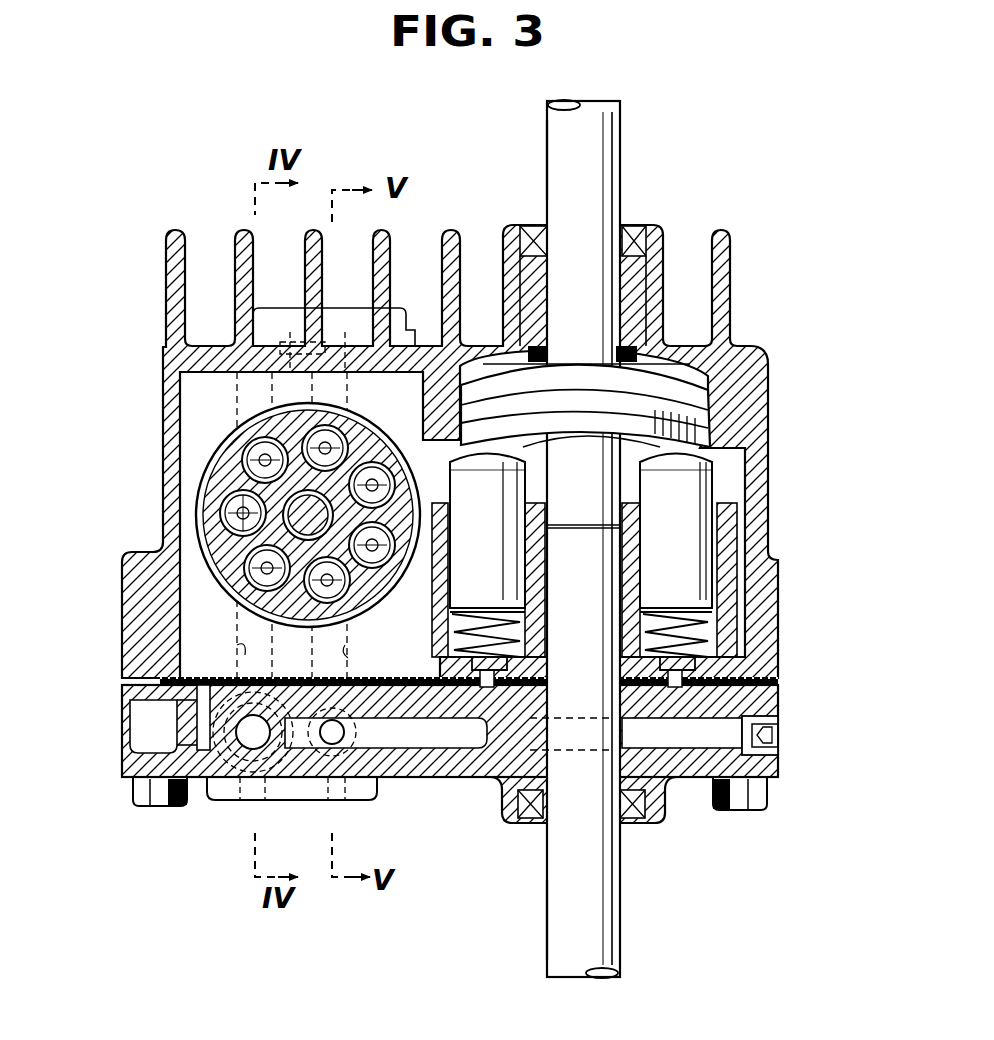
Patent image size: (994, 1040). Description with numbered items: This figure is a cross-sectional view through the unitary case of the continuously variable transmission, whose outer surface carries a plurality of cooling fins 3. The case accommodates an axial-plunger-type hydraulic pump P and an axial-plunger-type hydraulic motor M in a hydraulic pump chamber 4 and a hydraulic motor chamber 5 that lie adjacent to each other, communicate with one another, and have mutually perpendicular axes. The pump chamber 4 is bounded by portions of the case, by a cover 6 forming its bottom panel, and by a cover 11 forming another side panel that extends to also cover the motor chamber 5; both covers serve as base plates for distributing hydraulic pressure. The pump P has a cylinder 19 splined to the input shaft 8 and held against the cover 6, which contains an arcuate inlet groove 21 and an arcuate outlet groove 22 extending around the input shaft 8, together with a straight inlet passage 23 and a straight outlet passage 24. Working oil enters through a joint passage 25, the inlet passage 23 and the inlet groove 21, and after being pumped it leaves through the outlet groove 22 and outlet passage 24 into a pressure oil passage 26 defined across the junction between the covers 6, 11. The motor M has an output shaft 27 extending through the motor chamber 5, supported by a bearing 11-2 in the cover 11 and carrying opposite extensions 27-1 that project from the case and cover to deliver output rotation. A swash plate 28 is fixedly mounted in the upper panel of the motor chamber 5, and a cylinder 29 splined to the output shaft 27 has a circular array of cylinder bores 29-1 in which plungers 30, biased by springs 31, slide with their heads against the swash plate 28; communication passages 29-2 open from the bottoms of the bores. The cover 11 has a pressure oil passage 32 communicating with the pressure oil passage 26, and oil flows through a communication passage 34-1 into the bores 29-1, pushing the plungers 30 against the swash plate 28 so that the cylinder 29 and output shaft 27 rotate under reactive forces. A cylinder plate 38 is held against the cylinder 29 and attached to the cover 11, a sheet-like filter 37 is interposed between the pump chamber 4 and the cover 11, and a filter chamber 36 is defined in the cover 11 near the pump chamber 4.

The cooling fins 3 is at (242, 232).
The hydraulic pump chamber 4 is at (197, 610).
The hydraulic motor chamber 5 is at (738, 484).
The cover 6 is at (190, 410).
The input shaft 8 is at (246, 538).
The cover 11 is at (449, 778).
The bearing 11-2 is at (600, 778).
The cylinder 19 is at (262, 438).
The inlet groove 21 is at (395, 332).
The outlet groove 22 is at (349, 566).
The inlet passage 23 is at (205, 648).
The outlet passage 24 is at (346, 650).
The joint passage 25 is at (255, 760).
The pressure oil passage 26 is at (342, 760).
The output shaft 27 is at (602, 216).
The extensions 27-1 is at (606, 146).
The swash plate 28 is at (700, 400).
The cylinder 29 is at (484, 608).
The cylinder bores 29-1 is at (530, 560).
The communication passages 29-2 is at (692, 790).
The plungers 30 is at (518, 498).
The springs 31 is at (508, 640).
The pressure oil passage 32 is at (746, 735).
The communication passage 34-1 is at (488, 778).
The filter chamber 36 is at (190, 742).
The filter 37 is at (188, 722).
The cylinder plate 38 is at (735, 684).
The hydraulic motor M is at (736, 446).
The hydraulic pump P is at (195, 498).